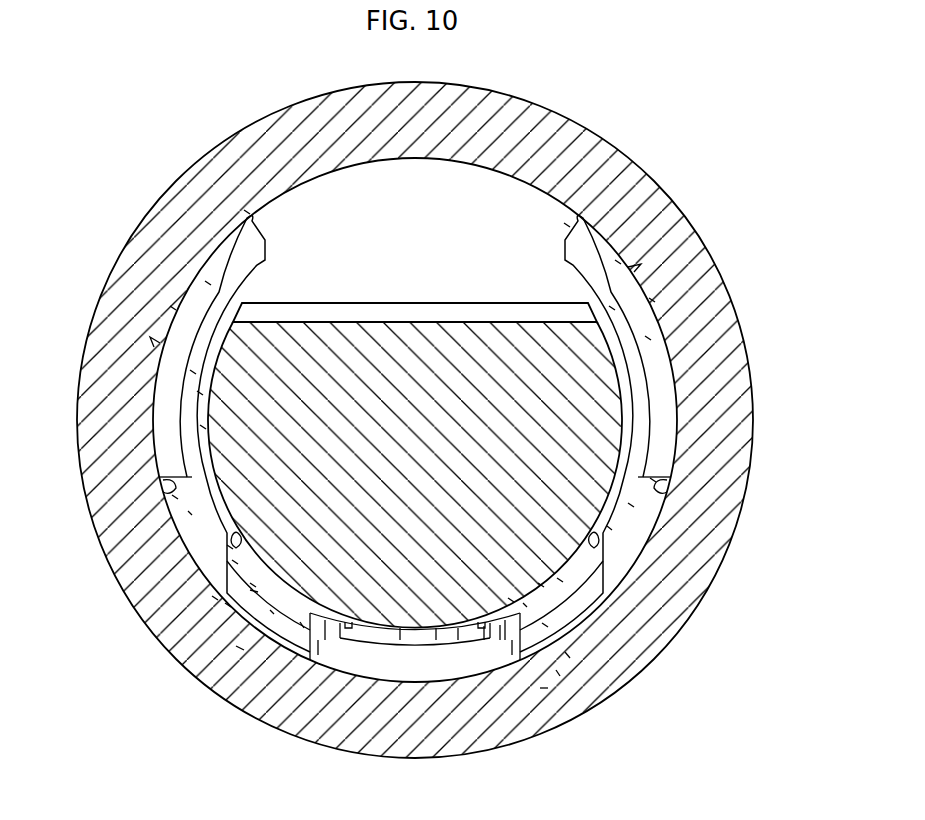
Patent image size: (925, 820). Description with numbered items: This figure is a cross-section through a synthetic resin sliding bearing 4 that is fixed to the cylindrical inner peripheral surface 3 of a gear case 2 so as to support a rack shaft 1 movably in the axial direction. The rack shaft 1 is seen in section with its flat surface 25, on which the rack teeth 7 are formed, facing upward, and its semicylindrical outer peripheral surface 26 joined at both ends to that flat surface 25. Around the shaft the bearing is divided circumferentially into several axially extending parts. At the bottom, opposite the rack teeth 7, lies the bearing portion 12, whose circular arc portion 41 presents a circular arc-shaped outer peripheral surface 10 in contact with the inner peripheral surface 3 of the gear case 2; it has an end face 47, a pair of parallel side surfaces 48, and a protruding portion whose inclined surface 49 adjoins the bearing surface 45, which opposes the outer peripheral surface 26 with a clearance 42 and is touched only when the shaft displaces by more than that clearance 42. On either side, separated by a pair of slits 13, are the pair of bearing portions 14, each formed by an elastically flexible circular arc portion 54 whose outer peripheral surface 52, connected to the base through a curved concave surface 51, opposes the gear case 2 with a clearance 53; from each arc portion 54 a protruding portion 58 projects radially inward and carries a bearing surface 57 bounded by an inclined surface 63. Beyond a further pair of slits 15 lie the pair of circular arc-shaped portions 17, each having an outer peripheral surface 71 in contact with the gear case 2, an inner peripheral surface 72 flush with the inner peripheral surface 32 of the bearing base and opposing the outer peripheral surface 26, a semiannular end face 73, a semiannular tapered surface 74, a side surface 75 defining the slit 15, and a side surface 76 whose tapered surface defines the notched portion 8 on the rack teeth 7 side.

The rack shaft 1 is at (548, 400).
The gear case 2 is at (240, 648).
The inner peripheral surface 3 is at (505, 705).
The sliding bearing 4 is at (228, 546).
The rack teeth 7 is at (508, 322).
The notched portion 8 is at (416, 185).
The outer peripheral surface 10 is at (418, 683).
The bearing portion 12 is at (487, 695).
The slits 13 is at (320, 650).
The bearing portions 14 is at (215, 598).
The slits 15 is at (183, 549).
The circular arc-shaped portions 17 is at (160, 343).
The flat surface 25 is at (360, 320).
The outer peripheral surface 26 is at (203, 427).
The inner peripheral surface 32 is at (630, 505).
The circular arc portion 41 is at (462, 705).
The clearance 42 is at (376, 625).
The bearing surface 45 is at (542, 690).
The end face 47 is at (440, 692).
The side surfaces 48 is at (325, 638).
The inclined surface 49 is at (405, 640).
The curved concave surface 51 is at (252, 585).
The outer peripheral surface 52 is at (272, 612).
The clearance 53 is at (302, 625).
The circular arc portion 54 is at (228, 605).
The bearing surface 57 is at (238, 545).
The protruding portion 58 is at (235, 562).
The inclined surface 63 is at (250, 592).
The outer peripheral surface 71 is at (173, 308).
The inner peripheral surface 72 is at (200, 393).
The end face 73 is at (208, 283).
The tapered surface 74 is at (193, 372).
The side surface 75 is at (175, 497).
The side surface 76 is at (247, 212).